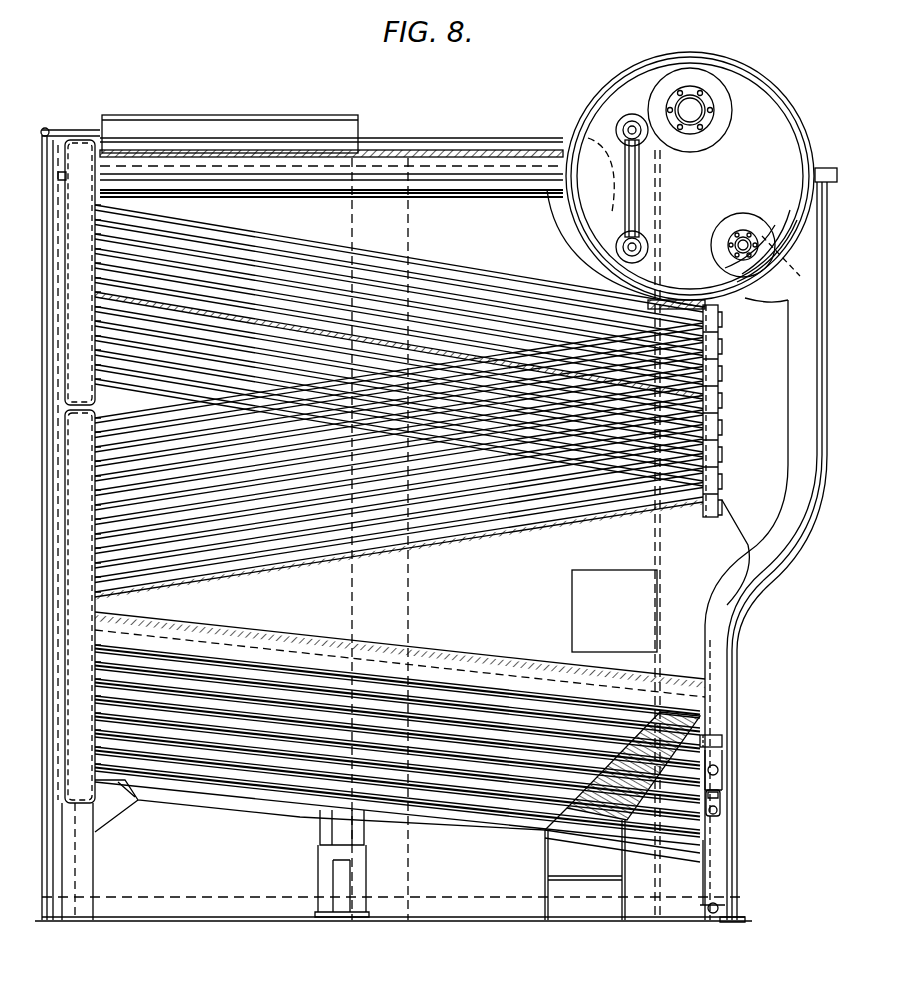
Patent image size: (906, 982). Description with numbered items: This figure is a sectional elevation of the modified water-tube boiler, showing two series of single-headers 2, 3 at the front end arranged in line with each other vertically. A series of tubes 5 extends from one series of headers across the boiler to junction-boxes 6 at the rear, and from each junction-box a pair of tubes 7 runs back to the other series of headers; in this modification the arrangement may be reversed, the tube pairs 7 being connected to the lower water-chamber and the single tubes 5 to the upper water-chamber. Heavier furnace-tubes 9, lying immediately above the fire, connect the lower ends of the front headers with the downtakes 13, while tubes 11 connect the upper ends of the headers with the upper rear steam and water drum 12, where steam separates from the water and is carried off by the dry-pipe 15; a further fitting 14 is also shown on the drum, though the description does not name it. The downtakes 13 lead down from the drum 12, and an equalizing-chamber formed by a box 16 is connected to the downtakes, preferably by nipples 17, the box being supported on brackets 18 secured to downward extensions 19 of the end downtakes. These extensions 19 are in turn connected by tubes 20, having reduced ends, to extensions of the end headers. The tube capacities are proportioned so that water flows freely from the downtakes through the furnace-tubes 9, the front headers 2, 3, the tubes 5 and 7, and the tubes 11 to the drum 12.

The lower series of single-headers 2 is at (83, 606).
The upper series of single-headers 3 is at (83, 272).
The tubes 5 is at (474, 318).
The junction-boxes 6 is at (721, 420).
The tubes 7 is at (472, 536).
The furnace-tubes 9 is at (527, 680).
The tubes 11 is at (347, 185).
The upper rear drum 12 is at (680, 179).
The downtakes 13 is at (798, 491).
The lower drum flange / nozzle 14 is at (745, 238).
The dry-pipe 15 is at (693, 112).
The box 16 is at (722, 757).
The nipples 17 is at (720, 742).
The brackets 18 is at (727, 800).
The extensions 19 is at (720, 858).
The tubes 20 is at (283, 706).